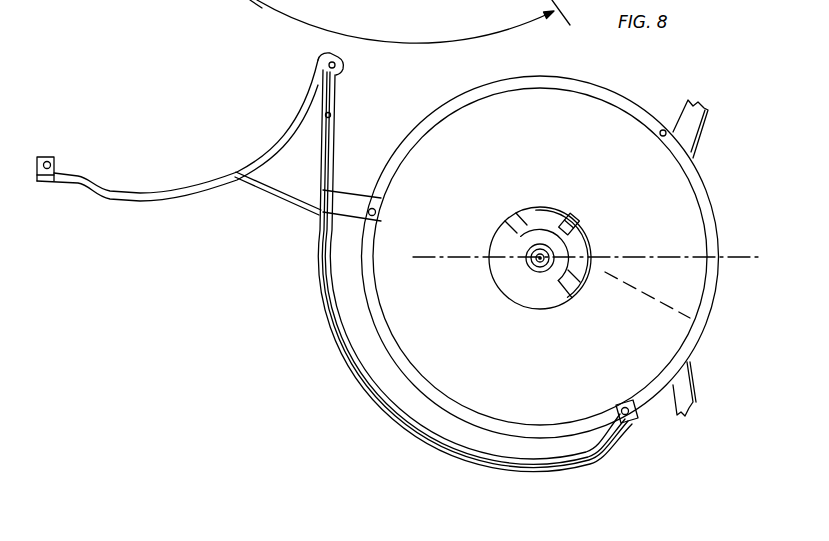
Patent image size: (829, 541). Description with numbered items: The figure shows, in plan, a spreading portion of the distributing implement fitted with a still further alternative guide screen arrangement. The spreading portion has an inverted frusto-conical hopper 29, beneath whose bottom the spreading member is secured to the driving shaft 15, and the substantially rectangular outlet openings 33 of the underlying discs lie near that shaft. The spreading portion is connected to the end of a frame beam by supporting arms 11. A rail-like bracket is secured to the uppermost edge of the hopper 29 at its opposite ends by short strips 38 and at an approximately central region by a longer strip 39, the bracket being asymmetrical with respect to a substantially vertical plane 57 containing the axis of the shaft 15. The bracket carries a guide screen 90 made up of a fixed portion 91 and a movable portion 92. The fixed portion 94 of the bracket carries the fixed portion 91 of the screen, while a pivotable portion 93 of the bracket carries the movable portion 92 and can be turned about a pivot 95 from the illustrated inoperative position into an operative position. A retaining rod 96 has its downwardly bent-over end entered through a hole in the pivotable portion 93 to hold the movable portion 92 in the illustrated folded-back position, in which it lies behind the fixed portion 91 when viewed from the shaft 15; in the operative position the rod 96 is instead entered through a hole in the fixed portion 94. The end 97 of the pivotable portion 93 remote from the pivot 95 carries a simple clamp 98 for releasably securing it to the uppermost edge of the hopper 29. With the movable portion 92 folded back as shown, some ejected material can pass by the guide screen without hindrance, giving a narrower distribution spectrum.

The supporting arm 11 is at (702, 131).
The driving shaft 15 is at (537, 268).
The hopper 29 is at (716, 257).
The outlet opening 33 is at (567, 217).
The short strip 38 is at (636, 406).
The longer strip 39 is at (362, 198).
The vertical plane 57 is at (426, 257).
The guide screen 90 is at (368, 385).
The fixed portion of the guide screen 91 is at (408, 424).
The movable portion of the guide screen 92 is at (185, 197).
The pivotable portion of the bracket 93 is at (178, 187).
The fixed portion of the bracket 94 is at (461, 271).
The pivot 95 is at (343, 67).
The retaining rod 96 is at (290, 205).
The end of the pivotable portion 97 is at (47, 184).
The clamp 98 is at (55, 160).